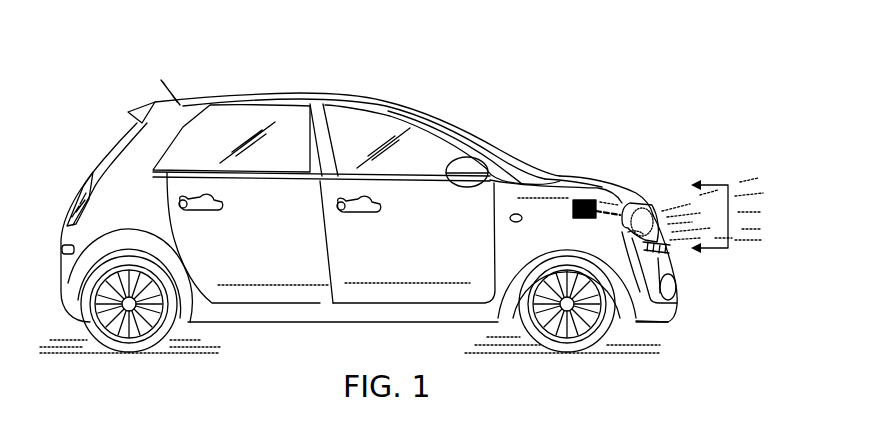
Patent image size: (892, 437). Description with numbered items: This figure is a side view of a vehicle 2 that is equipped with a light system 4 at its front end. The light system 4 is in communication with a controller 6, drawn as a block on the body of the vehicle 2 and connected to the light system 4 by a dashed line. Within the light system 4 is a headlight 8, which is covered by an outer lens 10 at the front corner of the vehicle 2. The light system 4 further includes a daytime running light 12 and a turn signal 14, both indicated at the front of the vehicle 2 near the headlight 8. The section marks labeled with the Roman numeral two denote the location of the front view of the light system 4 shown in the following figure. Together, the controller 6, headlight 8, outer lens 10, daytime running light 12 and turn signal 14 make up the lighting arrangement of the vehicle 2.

The vehicle 2 is at (526, 63).
The light system 4 is at (688, 154).
The controller 6 is at (586, 200).
The headlight 8 is at (652, 188).
The outer lens 10 is at (657, 210).
The daytime running light 12 is at (670, 248).
The turn signal 14 is at (643, 250).